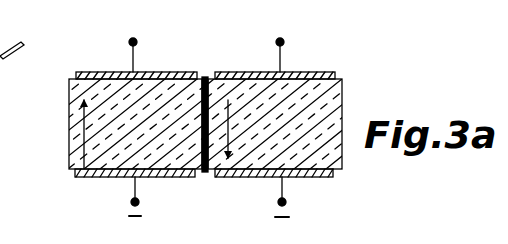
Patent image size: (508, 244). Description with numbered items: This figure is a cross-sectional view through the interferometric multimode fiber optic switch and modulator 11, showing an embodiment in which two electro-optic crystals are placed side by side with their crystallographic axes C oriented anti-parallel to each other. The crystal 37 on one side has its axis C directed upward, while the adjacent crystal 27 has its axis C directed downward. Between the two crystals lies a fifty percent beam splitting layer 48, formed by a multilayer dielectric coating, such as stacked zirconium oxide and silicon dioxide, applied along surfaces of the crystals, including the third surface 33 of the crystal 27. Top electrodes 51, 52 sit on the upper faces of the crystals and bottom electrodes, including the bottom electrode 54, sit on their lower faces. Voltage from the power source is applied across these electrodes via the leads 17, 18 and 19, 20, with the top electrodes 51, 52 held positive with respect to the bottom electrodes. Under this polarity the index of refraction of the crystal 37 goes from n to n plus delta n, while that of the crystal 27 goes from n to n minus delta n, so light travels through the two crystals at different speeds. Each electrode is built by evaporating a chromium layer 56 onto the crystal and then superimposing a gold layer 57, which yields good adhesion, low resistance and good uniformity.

The interferometric multimode fiber optic switch and modulator 11 is at (230, 36).
The lead 17 is at (132, 60).
The lead 18 is at (134, 188).
The lead 19 is at (281, 62).
The lead 20 is at (285, 202).
The crystal 27 is at (343, 108).
The third surface 33 is at (69, 179).
The crystal 37 is at (69, 120).
The beam splitting layer 48 is at (206, 177).
The top electrode 51 is at (62, 71).
The top electrode 52 is at (344, 70).
The bottom electrode 54 is at (345, 181).
The chromium layer 56 is at (199, 78).
The gold layer 57 is at (170, 72).